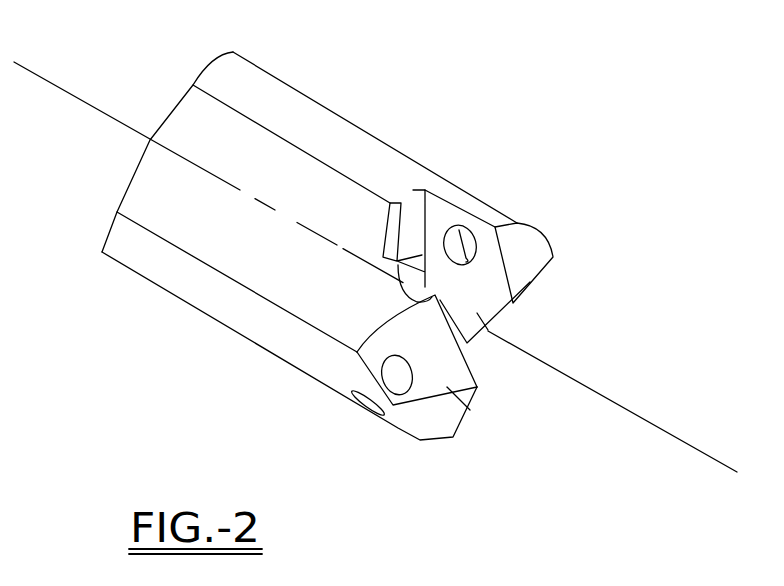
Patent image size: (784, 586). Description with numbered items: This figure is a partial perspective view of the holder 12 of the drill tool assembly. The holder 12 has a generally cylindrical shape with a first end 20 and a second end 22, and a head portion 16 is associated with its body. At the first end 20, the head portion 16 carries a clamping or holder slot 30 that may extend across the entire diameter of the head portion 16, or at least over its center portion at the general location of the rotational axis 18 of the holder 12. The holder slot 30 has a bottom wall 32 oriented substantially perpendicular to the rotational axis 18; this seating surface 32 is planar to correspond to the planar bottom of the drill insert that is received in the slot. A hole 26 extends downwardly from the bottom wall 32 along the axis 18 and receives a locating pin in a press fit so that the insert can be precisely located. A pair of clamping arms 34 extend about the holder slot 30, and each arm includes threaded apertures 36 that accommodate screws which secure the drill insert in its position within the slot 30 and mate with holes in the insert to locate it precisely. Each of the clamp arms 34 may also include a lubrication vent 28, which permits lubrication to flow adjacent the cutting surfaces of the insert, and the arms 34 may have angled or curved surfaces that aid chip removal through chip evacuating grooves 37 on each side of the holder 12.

The holder 12 is at (249, 350).
The head portion 16 is at (490, 205).
The rotational axis 18 is at (63, 90).
The first end 20 is at (484, 326).
The second end 22 is at (140, 153).
The hole 26 is at (402, 274).
The lubrication vent 28 is at (393, 372).
The holder slot 30 is at (481, 369).
The bottom wall 32 is at (412, 202).
The clamping arms 34 is at (490, 338).
The apertures 36 is at (470, 263).
The chip evacuating grooves 37 is at (267, 268).